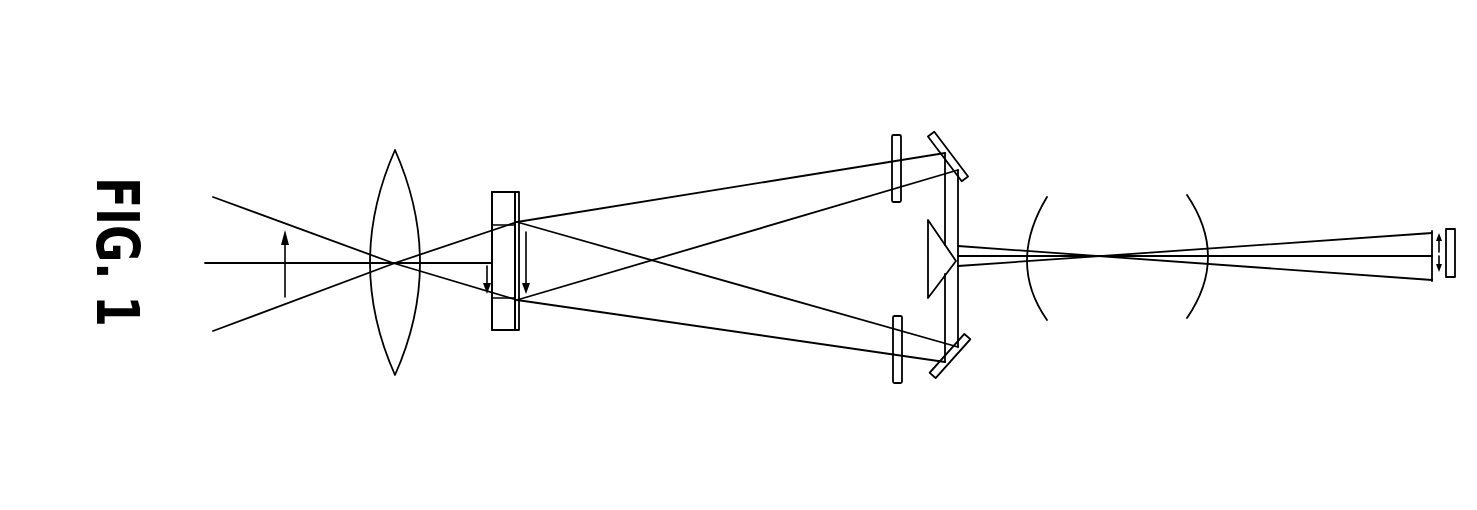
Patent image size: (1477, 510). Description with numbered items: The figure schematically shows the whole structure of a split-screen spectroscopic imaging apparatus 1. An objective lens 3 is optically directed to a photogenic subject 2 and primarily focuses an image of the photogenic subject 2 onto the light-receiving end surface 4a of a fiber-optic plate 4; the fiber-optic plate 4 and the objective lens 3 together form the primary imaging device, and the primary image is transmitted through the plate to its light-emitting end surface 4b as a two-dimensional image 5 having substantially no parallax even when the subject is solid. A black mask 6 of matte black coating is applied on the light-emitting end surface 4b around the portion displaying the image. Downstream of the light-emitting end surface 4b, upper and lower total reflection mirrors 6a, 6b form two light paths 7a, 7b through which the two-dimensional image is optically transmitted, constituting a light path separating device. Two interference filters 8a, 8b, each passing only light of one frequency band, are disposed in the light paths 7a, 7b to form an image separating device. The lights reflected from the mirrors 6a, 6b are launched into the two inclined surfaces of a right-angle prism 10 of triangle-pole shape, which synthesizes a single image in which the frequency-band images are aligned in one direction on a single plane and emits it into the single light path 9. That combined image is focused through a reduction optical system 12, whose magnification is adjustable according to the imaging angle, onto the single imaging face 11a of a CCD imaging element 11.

The split-screen spectroscopic imaging apparatus 1 is at (785, 33).
The photogenic subject 2 is at (287, 261).
The objective lens 3 is at (395, 178).
The fiber-optic plate 4 is at (504, 184).
The light-receiving end surface 4a is at (492, 314).
The light-emitting end surface 4b is at (521, 314).
The two-dimensional image 5 is at (531, 263).
The black mask 6 is at (522, 203).
The upper total reflection mirror 6a is at (941, 133).
The lower total reflection mirror 6b is at (942, 382).
The light path 7a is at (667, 203).
The light path 7b is at (667, 315).
The interference filter 8a is at (886, 137).
The interference filter 8b is at (892, 376).
The single light path 9 is at (992, 248).
The right-angle prism 10 is at (921, 268).
The imaging element 11 is at (1448, 229).
The imaging face 11a is at (1440, 273).
The reduction optical system 12 is at (1193, 208).